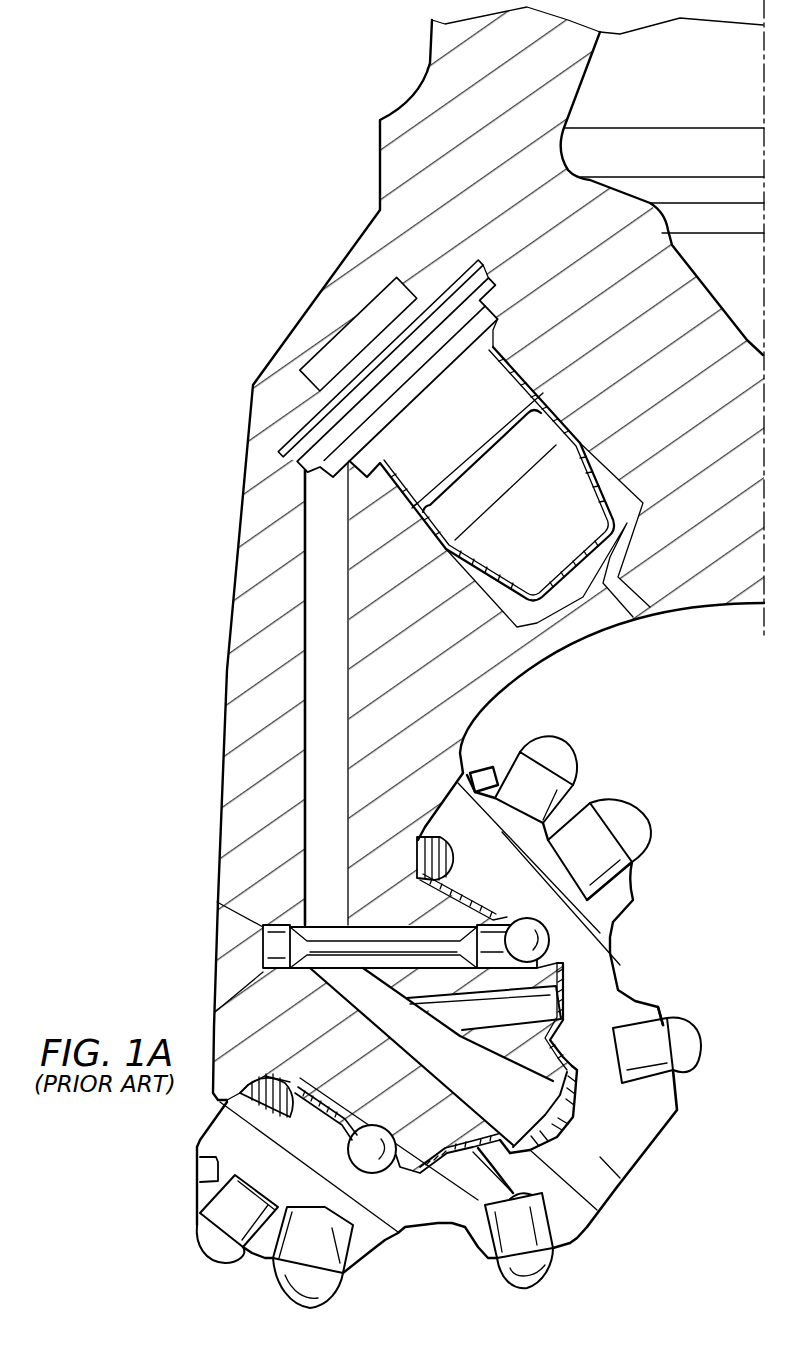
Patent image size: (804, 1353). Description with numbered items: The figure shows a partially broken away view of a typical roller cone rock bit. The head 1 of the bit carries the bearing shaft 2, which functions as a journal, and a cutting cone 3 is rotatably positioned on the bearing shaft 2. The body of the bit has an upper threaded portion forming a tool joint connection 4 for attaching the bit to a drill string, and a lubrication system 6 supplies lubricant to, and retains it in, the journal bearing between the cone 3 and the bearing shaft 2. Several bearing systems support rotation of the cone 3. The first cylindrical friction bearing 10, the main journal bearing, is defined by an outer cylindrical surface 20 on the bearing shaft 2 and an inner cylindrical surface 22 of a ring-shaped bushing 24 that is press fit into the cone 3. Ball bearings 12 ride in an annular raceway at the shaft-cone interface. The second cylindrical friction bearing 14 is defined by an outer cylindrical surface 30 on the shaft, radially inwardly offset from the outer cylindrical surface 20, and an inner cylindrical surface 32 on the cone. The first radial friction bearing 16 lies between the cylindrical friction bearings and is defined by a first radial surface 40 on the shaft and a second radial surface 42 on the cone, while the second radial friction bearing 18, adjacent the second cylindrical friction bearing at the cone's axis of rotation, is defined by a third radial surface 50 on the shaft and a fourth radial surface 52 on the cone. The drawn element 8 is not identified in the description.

The head 1 is at (152, 618).
The bearing shaft 2 is at (423, 1165).
The cutting cone 3 is at (641, 1153).
The tool joint connection 4 is at (242, 527).
The lubrication system 6 is at (437, 282).
The nozzle 8 is at (500, 473).
The first cylindrical friction bearing 10 is at (490, 915).
The ball bearings 12 is at (358, 1160).
The second cylindrical friction bearing 14 is at (566, 1055).
The first radial friction bearing 16 is at (602, 993).
The second radial friction bearing 18 is at (573, 1098).
The outer cylindrical surface 20 is at (313, 1093).
The inner cylindrical surface 22 is at (322, 1127).
The bushing 24 is at (302, 1097).
The outer cylindrical surface 30 is at (545, 1055).
The inner cylindrical surface 32 is at (480, 1140).
The first radial surface 40 is at (455, 1170).
The second radial surface 42 is at (437, 1165).
The third radial surface 50 is at (518, 1147).
The fourth radial surface 52 is at (532, 1135).